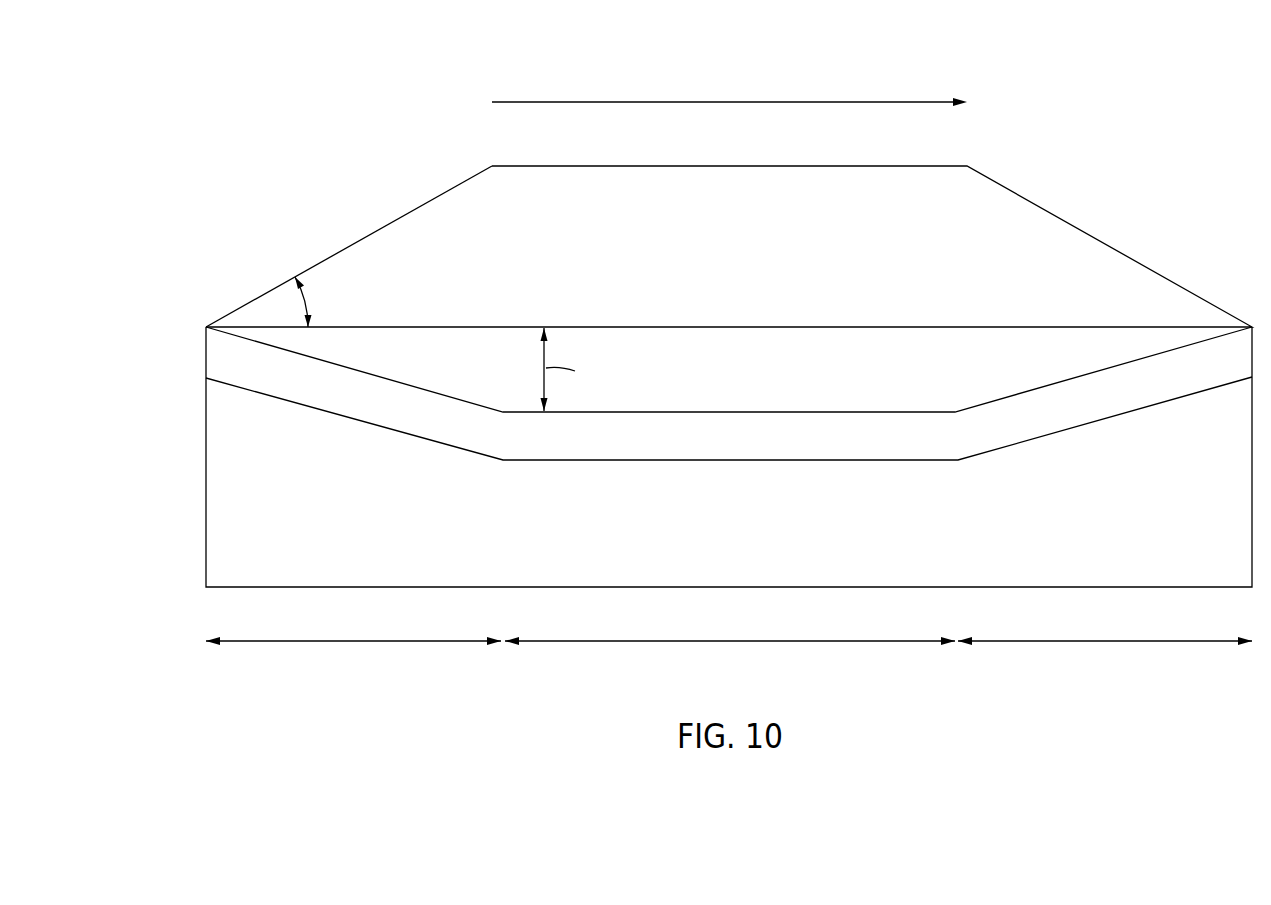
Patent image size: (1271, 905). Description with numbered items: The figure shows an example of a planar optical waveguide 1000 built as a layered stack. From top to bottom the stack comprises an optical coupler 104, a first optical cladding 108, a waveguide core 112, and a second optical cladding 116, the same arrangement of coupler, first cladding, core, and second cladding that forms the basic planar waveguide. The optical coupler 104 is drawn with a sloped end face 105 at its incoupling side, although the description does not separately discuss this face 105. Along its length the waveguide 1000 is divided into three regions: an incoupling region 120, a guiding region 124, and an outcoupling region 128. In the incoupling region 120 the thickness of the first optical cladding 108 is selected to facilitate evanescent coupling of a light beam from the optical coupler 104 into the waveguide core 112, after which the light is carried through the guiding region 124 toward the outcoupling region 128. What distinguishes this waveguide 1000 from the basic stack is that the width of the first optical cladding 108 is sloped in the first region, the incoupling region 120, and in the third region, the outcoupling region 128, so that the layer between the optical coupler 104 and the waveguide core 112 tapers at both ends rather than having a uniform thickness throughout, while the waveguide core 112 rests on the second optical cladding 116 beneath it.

The planar optical waveguide 1000 is at (1128, 74).
The optical coupler 104 is at (728, 166).
The sloped facet of substrate 105 is at (325, 260).
The first optical cladding 108 is at (288, 340).
The waveguide core 112 is at (220, 355).
The second optical cladding 116 is at (206, 513).
The incoupling region 120 is at (353, 643).
The guiding region 124 is at (728, 643).
The outcoupling region 128 is at (1105, 643).